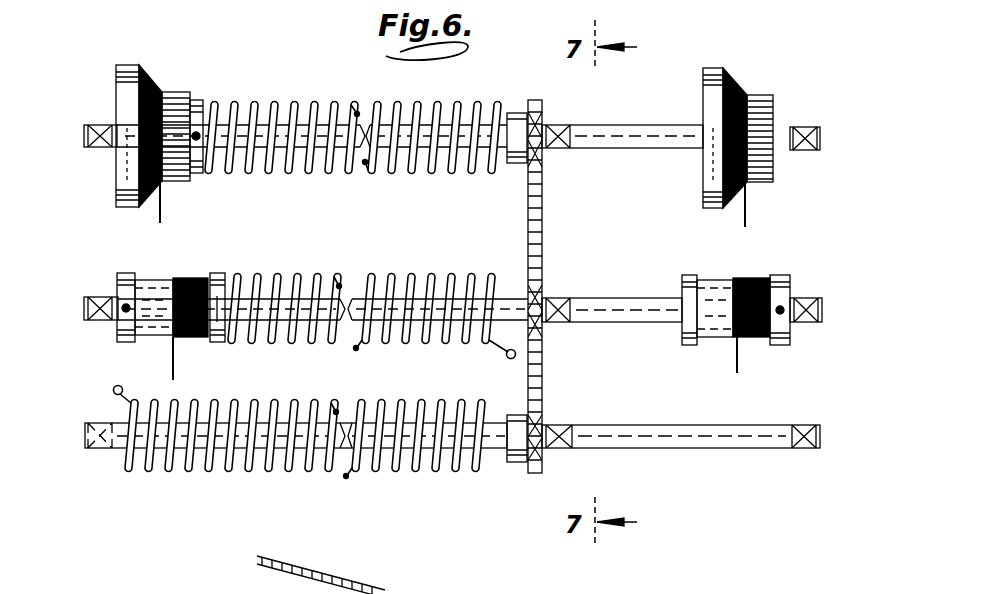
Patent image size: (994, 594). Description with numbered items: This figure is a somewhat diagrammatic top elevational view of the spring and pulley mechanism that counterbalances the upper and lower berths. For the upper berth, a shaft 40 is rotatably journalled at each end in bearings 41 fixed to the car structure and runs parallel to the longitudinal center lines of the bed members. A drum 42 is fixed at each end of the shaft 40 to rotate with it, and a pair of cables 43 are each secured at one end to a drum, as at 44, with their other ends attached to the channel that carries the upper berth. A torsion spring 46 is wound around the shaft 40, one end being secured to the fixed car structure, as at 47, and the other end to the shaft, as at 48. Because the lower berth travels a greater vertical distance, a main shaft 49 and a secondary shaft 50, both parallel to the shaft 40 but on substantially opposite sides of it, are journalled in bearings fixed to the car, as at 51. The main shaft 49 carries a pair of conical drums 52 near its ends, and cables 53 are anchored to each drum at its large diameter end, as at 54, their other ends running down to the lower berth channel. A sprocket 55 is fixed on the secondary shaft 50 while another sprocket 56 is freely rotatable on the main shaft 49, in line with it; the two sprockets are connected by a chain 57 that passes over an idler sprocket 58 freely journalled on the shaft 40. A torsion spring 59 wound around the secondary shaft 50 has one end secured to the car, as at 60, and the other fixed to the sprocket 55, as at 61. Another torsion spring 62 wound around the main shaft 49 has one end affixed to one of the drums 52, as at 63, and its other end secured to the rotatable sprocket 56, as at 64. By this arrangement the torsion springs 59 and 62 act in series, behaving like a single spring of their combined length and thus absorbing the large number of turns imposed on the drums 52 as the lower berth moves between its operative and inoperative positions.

The shaft 40 is at (512, 297).
The bearings 41 is at (98, 296).
The drum 42 is at (178, 250).
The cables 43 is at (176, 376).
The cable attachment to drum 44 is at (240, 262).
The torsion spring 46 is at (300, 280).
The spring end secured to car structure 47 is at (507, 360).
The spring end secured to shaft 48 is at (228, 340).
The main shaft 49 is at (604, 124).
The secondary shaft 50 is at (624, 424).
The bearings 51 is at (100, 148).
The conical drums 52 is at (188, 66).
The cables 53 is at (748, 224).
The cable anchorage on drum 54 is at (118, 186).
The sprocket 55 is at (160, 210).
The sprocket 56 is at (542, 104).
The chain 57 is at (545, 240).
The idler sprocket 58 is at (545, 296).
The torsion spring 59 is at (388, 468).
The spring end secured to car structure 60 is at (116, 386).
The spring end secured to sprocket 61 is at (520, 466).
The torsion spring 62 is at (418, 104).
The spring end affixed to drum 63 is at (200, 174).
The spring end secured to sprocket 64 is at (520, 164).